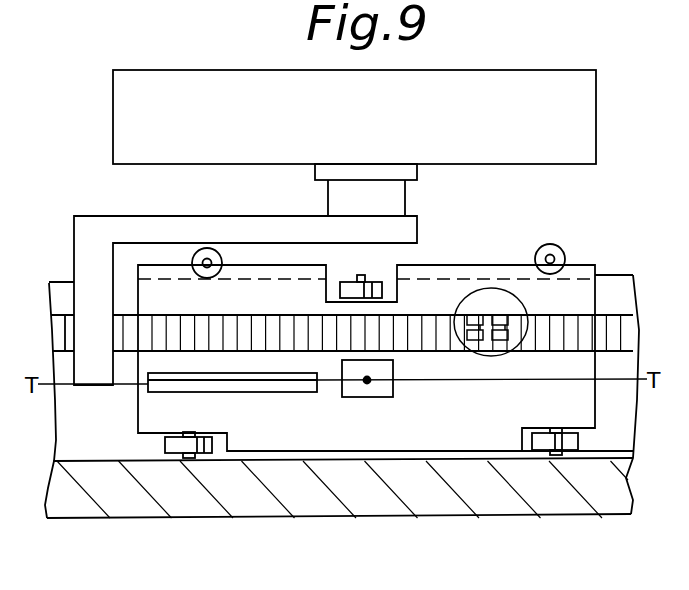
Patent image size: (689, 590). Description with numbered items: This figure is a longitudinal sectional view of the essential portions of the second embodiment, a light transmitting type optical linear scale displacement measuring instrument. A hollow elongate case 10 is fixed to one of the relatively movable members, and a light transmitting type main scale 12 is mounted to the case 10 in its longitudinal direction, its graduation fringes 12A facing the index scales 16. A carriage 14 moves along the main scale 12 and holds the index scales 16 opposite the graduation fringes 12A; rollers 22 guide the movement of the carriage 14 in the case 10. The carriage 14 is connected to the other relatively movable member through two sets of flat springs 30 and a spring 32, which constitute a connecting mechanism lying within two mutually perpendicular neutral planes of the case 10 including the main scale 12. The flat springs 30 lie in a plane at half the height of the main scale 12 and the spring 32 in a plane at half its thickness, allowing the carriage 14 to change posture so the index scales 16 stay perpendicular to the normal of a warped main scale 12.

The case 10 is at (388, 495).
The main scale 12 is at (65, 280).
The graduation fringes 12A is at (62, 313).
The carriage 14 is at (497, 265).
The index scales 16 is at (503, 314).
The rollers 22 is at (553, 250).
The flat springs 30 is at (303, 393).
The spring 32 is at (328, 193).